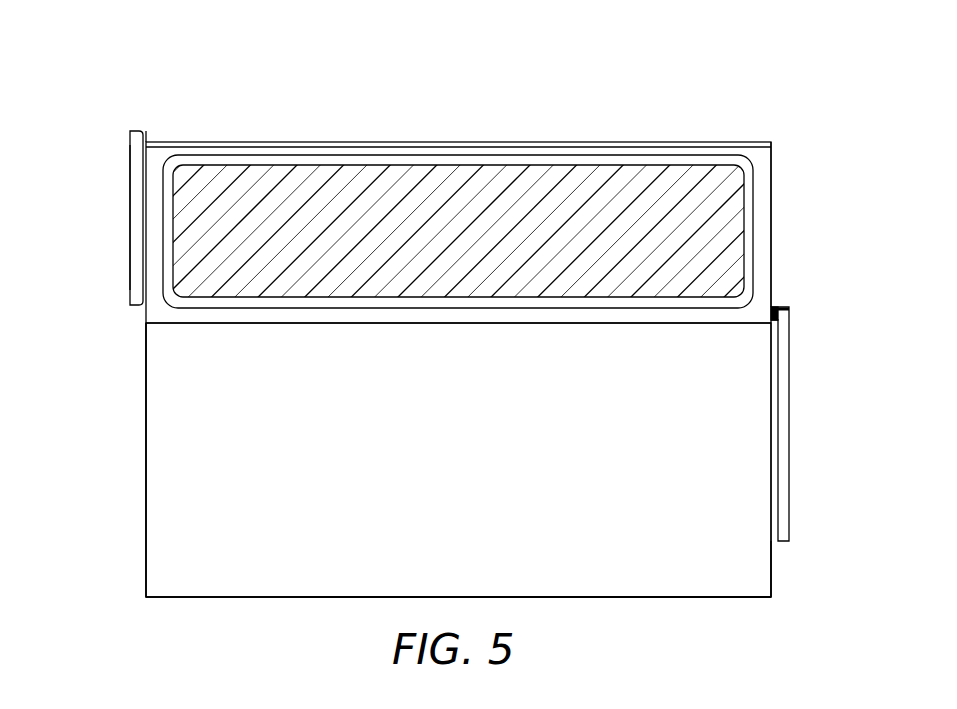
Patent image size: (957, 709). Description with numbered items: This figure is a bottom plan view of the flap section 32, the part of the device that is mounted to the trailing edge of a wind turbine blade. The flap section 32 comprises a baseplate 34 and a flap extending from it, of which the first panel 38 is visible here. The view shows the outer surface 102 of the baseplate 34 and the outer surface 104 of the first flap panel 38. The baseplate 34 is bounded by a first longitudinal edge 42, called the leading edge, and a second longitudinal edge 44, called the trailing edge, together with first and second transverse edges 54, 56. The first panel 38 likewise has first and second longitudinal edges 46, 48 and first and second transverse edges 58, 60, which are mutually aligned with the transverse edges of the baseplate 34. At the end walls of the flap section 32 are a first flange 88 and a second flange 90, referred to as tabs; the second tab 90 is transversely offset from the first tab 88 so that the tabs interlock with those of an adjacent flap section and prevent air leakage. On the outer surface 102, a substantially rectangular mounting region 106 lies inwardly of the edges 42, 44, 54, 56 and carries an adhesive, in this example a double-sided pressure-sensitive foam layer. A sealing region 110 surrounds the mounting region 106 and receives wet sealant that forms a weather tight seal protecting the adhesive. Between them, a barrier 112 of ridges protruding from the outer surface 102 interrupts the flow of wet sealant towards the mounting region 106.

The flap section 32 is at (724, 82).
The baseplate 34 is at (764, 220).
The first panel 38 is at (597, 572).
The first longitudinal edge 42 is at (290, 141).
The second longitudinal edge 44 is at (158, 322).
The first longitudinal edge 46 is at (178, 324).
The second longitudinal edge 48 is at (190, 598).
The first transverse edge 54 is at (146, 182).
The second transverse edge 56 is at (771, 172).
The first transverse edge 58 is at (146, 489).
The second transverse edge 60 is at (771, 562).
The first flange 88 is at (138, 237).
The second flange 90 is at (778, 408).
The outer surface 102 is at (430, 182).
The outer surface 104 is at (268, 550).
The mounting region 106 is at (522, 195).
The sealing region 110 is at (763, 268).
The barrier 112 is at (665, 162).